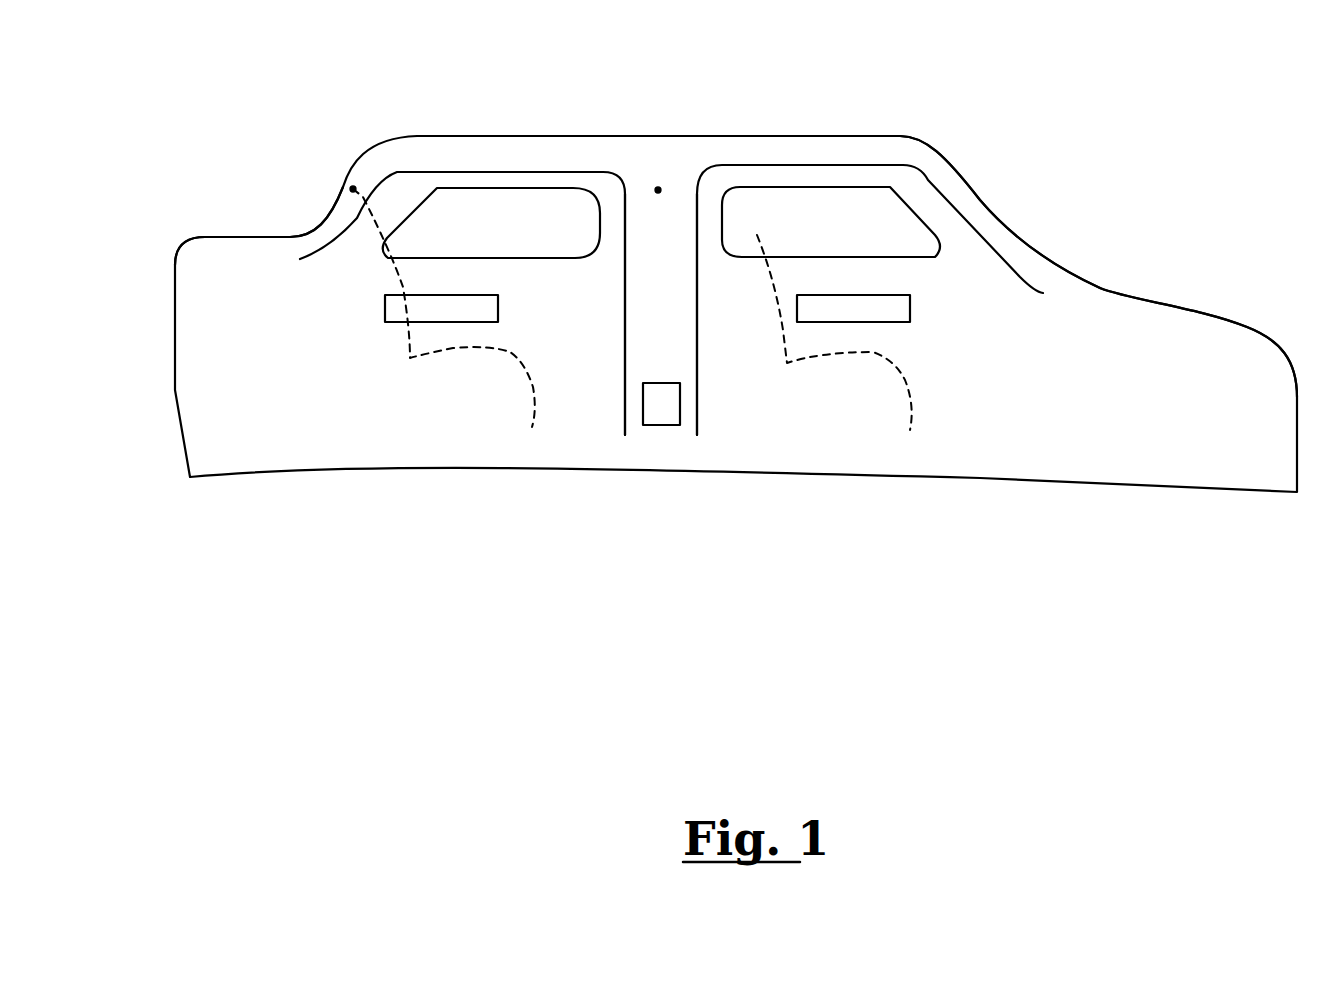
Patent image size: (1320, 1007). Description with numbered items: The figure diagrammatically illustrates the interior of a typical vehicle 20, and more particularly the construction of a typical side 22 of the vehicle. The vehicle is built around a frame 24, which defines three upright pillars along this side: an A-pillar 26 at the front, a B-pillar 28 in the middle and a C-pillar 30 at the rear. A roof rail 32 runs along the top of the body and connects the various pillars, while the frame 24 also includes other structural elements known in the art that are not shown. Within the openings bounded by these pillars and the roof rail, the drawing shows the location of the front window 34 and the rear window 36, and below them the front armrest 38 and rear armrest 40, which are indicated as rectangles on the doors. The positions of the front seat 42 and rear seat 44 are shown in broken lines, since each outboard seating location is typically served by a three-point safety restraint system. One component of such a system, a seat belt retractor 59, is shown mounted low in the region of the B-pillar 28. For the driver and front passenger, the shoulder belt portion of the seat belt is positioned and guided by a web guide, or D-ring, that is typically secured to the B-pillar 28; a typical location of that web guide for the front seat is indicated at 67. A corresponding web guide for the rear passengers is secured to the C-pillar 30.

The vehicle 20 is at (933, 134).
The side of the vehicle 22 is at (312, 222).
The frame 24 is at (1100, 282).
The A-pillar 26 is at (984, 230).
The B-pillar 28 is at (663, 280).
The C-pillar 30 is at (359, 178).
The roof rail 32 is at (507, 160).
The front window 34 is at (890, 247).
The rear window 36 is at (547, 242).
The front armrest 38 is at (835, 308).
The rear armrest 40 is at (480, 312).
The front seat 42 is at (920, 401).
The rear seat 44 is at (538, 361).
The seat belt retractor 59 is at (667, 405).
The location of the web guide 67 is at (352, 186).